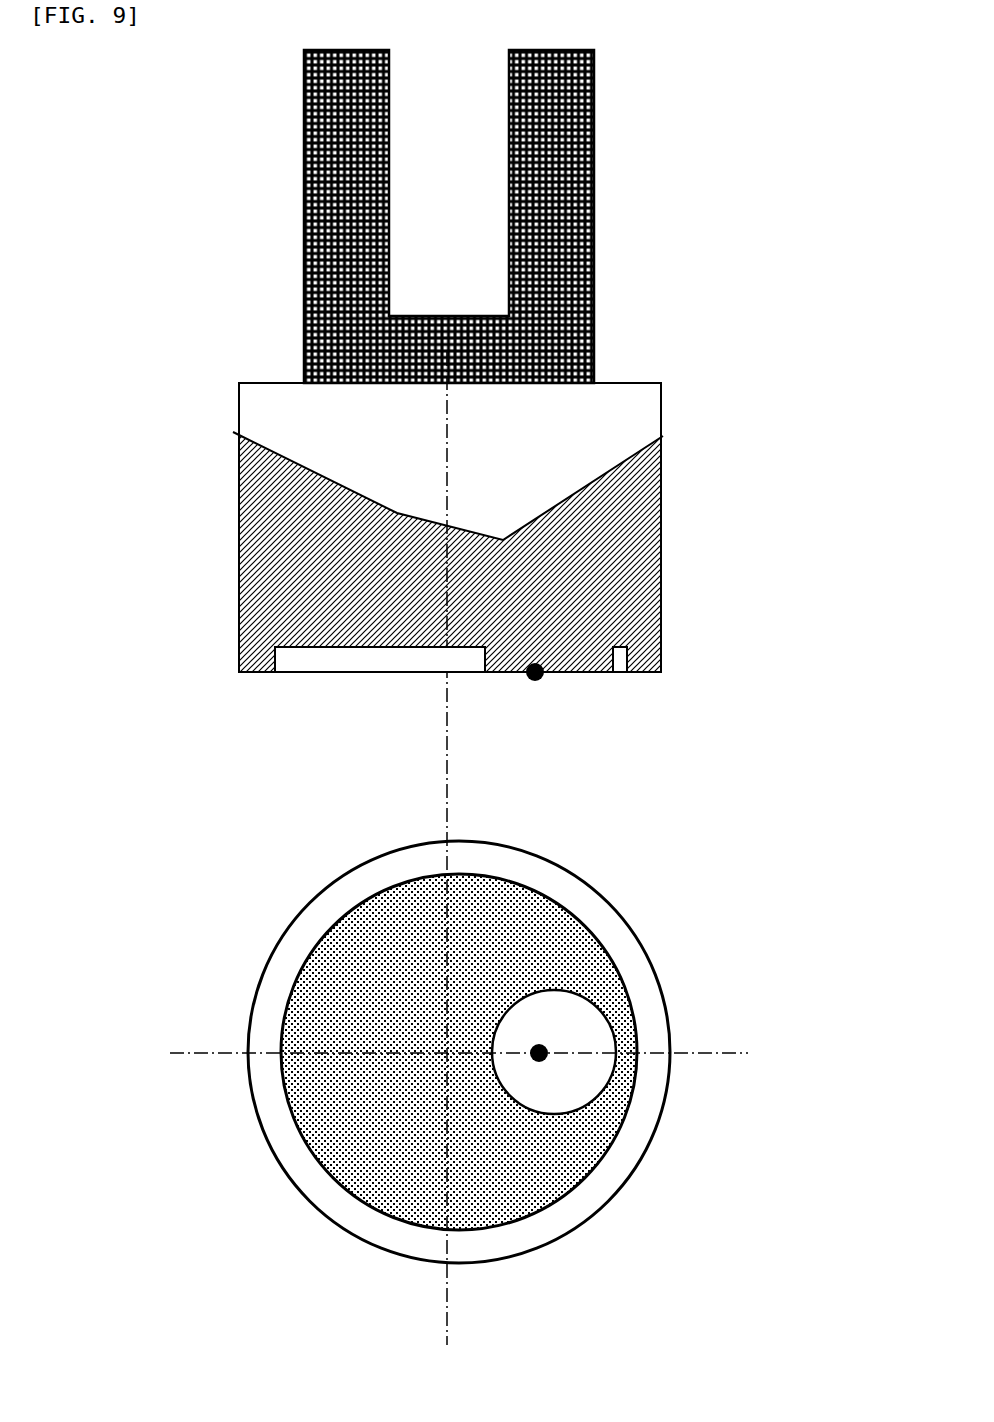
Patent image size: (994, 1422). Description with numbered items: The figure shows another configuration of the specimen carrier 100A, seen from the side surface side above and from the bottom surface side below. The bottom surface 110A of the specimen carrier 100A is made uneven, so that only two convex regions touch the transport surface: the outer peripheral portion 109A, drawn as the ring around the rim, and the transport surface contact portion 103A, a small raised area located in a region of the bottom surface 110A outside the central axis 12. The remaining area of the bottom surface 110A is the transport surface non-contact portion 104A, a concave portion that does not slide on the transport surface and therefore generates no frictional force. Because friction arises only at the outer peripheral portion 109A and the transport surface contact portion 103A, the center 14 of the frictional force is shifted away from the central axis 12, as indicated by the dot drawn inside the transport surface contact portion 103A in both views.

The specimen carrier 100A is at (663, 475).
The bottom surface 110A is at (663, 645).
The transport surface non-contact portion 104A is at (340, 650).
The outer peripheral portion 109A is at (620, 948).
The transport surface contact portion 103A is at (582, 672).
The central axis 12 is at (449, 1061).
The center of the frictional force 14 is at (535, 672).